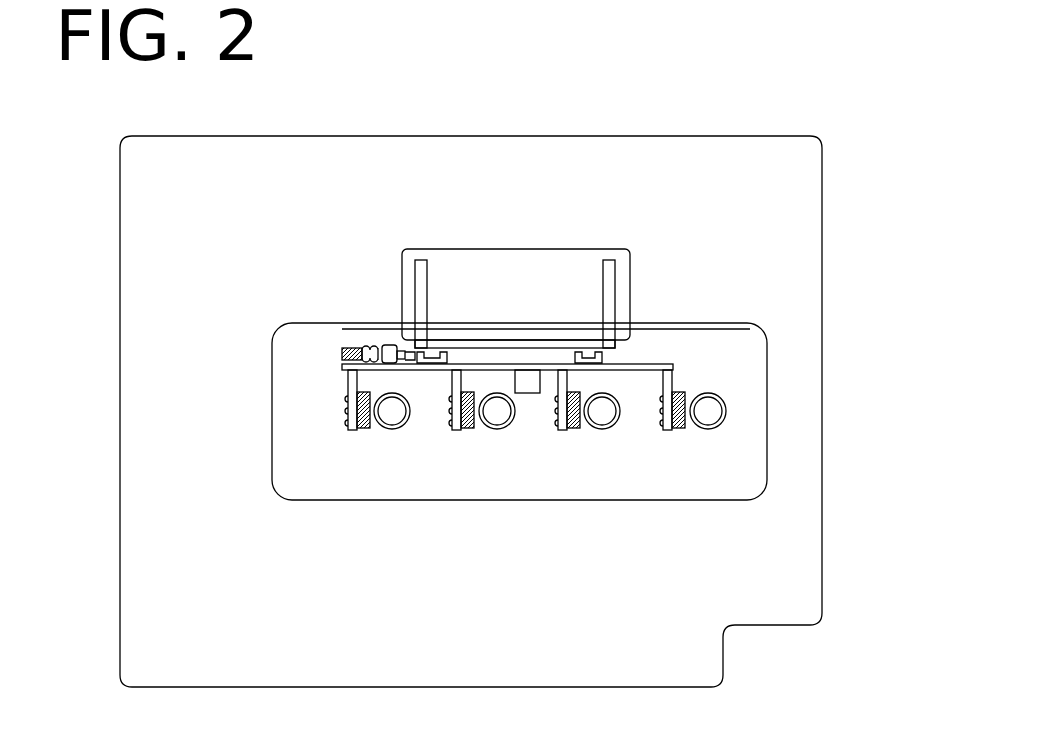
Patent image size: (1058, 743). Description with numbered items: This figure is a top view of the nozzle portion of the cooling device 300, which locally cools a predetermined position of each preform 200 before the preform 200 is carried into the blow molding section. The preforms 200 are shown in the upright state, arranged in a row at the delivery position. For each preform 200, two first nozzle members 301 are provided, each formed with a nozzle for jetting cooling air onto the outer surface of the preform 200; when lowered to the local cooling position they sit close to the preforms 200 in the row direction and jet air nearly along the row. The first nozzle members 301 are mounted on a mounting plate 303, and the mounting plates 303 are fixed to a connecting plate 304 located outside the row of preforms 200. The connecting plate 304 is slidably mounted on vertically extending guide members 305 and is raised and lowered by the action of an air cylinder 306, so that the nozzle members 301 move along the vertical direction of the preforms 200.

The cooling device 300 is at (764, 120).
The mounting plate 303 is at (673, 389).
The connecting plate 304 is at (650, 362).
The guide member 305 is at (435, 352).
The air cylinder 306 is at (528, 394).
The first nozzle member 301 is at (347, 393).
The preform 200 is at (487, 428).